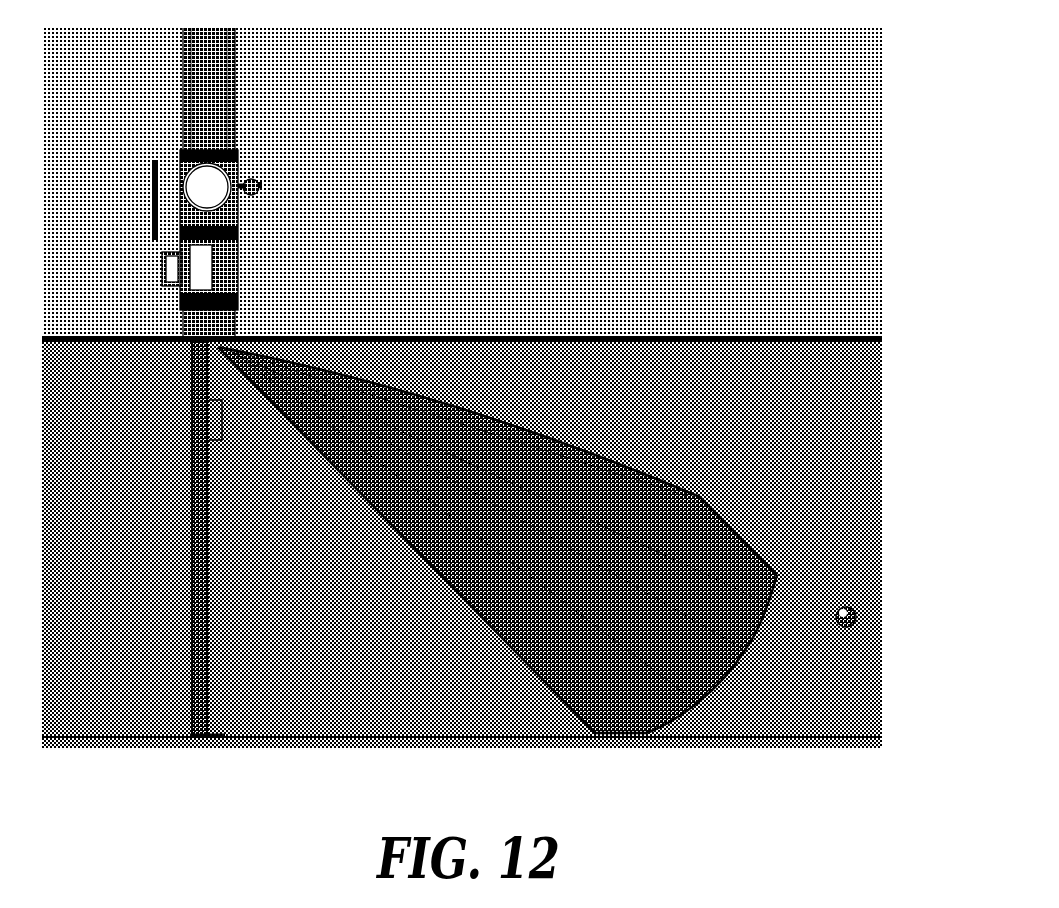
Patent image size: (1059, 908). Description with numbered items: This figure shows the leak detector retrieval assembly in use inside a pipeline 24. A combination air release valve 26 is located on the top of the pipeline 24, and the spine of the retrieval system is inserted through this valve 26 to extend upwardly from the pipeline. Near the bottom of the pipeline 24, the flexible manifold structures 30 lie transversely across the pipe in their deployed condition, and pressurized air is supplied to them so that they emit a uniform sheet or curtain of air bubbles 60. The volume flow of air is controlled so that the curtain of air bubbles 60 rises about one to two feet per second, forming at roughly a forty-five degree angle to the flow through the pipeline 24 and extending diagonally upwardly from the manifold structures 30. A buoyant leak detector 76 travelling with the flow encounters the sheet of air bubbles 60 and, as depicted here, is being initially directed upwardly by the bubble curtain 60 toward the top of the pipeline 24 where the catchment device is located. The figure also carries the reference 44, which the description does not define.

The combination air release valve 26 is at (176, 160).
The pipeline 24 is at (850, 337).
The upper boundary of treatment zone 44 is at (777, 576).
The leak detector 76 is at (855, 625).
The sheet or curtain of air bubbles 60 is at (540, 596).
The flexible manifold structures 30 is at (713, 700).